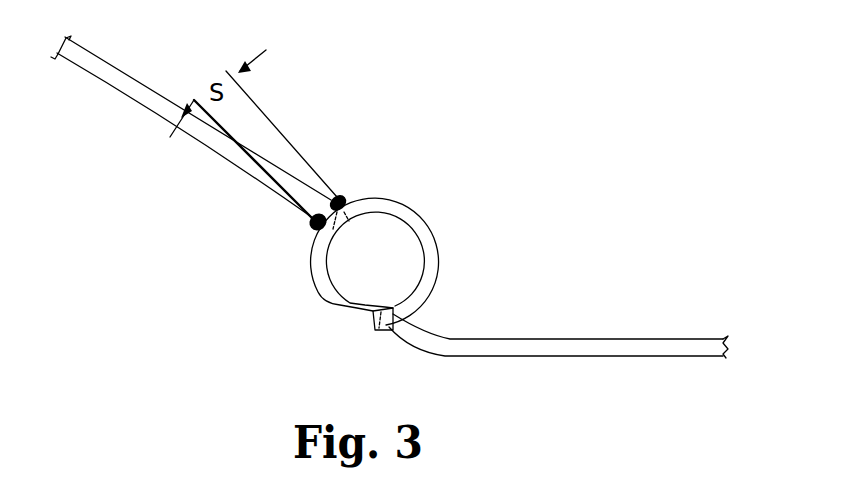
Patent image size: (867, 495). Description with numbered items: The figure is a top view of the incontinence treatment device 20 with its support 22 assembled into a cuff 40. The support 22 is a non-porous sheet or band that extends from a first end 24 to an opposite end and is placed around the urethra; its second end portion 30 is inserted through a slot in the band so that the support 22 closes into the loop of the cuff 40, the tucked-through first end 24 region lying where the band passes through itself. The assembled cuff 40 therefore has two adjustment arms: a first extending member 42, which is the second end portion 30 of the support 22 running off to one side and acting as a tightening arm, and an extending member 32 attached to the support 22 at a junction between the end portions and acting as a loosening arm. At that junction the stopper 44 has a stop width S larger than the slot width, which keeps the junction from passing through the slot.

The incontinence treatment device 20 is at (518, 170).
The support 22 is at (432, 250).
The first end 24 is at (373, 330).
The second end portion 30 is at (637, 338).
The extending member 32 is at (210, 142).
The cuff 40 is at (402, 196).
The first extending member 42 is at (578, 330).
The stopper 44 is at (310, 229).